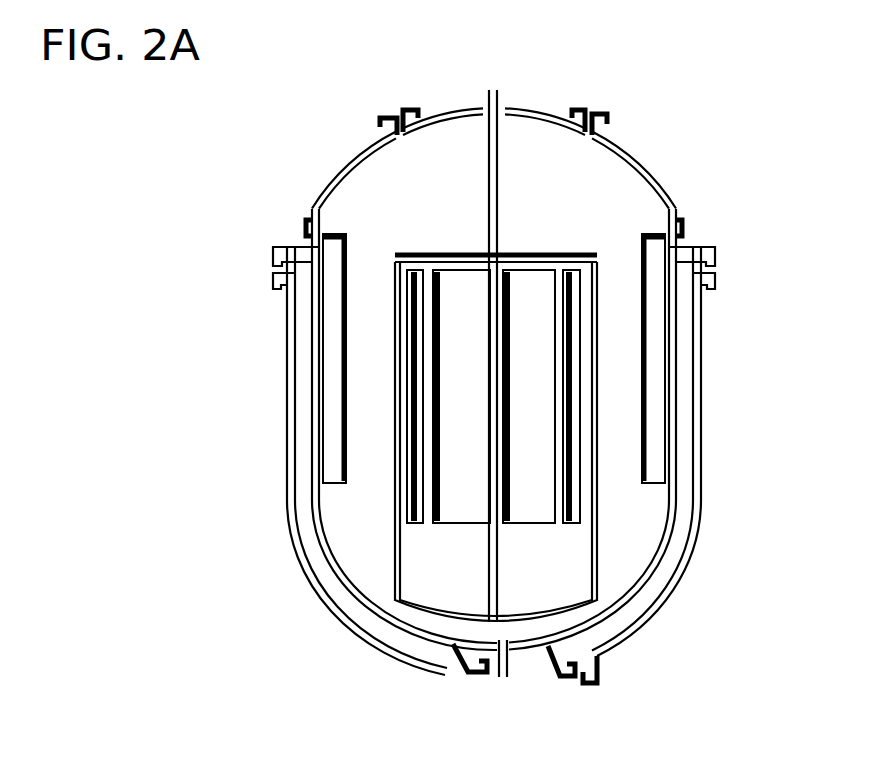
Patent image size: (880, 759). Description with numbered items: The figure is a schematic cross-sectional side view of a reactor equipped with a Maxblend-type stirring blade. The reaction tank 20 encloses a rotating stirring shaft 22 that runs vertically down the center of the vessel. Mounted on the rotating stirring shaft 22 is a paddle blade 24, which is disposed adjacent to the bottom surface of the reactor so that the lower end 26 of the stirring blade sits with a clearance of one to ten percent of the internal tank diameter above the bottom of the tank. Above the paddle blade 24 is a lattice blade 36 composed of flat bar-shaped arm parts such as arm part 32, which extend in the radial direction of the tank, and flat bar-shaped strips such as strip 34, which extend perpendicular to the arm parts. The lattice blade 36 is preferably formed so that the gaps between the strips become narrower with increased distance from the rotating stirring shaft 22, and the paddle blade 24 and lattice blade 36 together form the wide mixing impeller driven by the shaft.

The reaction tank 20 is at (312, 633).
The rotating stirring shaft 22 is at (498, 188).
The paddle blade 24 is at (612, 560).
The lower end 26 is at (540, 652).
The arm part 32 is at (541, 262).
The strip 34 is at (562, 383).
The lattice blade 36 is at (614, 325).